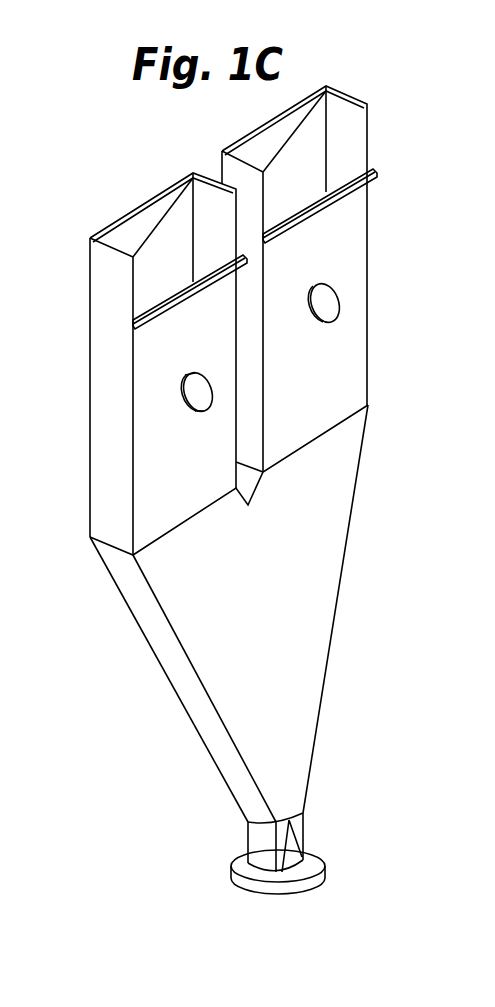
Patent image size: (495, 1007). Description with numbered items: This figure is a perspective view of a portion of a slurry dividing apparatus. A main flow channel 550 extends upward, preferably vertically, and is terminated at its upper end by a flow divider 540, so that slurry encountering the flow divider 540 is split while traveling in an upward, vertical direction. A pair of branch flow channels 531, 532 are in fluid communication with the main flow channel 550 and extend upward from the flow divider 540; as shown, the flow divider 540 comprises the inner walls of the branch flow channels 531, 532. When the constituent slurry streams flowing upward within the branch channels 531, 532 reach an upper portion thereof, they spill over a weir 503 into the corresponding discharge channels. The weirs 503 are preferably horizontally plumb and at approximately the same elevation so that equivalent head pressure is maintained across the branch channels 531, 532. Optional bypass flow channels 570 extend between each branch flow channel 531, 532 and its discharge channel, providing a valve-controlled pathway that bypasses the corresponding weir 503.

The branch flow channel 531 is at (300, 165).
The branch flow channel 532 is at (148, 238).
The weir 503 is at (232, 275).
The bypass flow channel 570 is at (300, 302).
The flow divider 540 is at (236, 497).
The main flow channel 550 is at (352, 468).